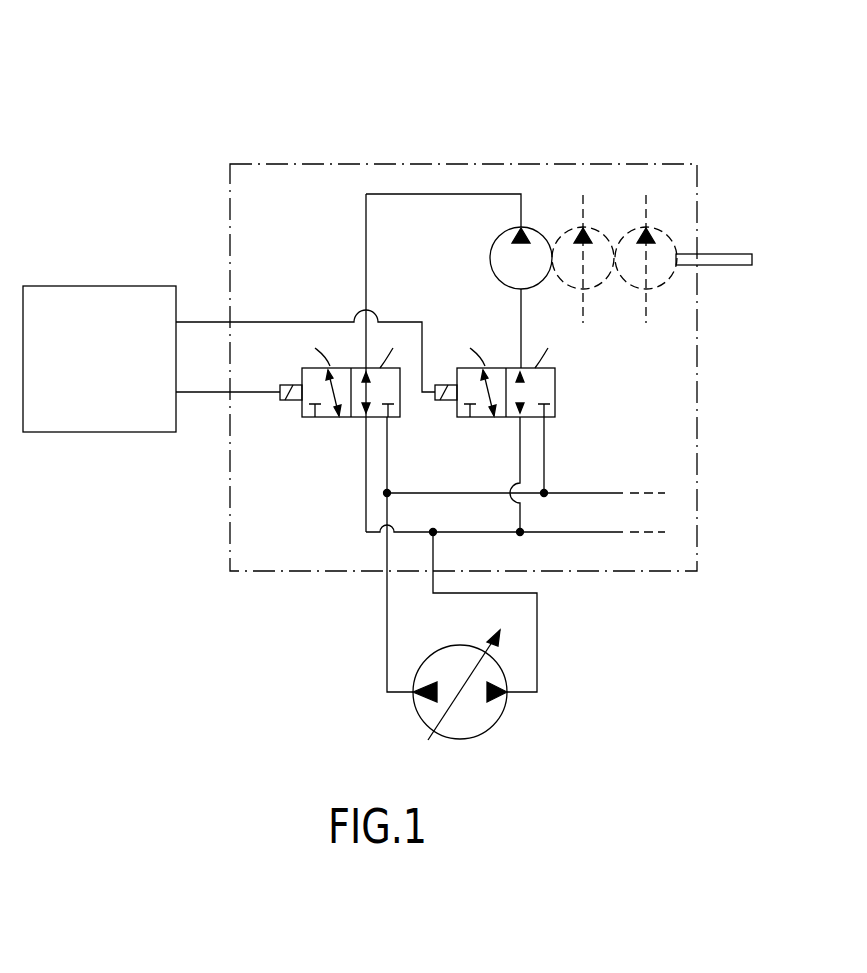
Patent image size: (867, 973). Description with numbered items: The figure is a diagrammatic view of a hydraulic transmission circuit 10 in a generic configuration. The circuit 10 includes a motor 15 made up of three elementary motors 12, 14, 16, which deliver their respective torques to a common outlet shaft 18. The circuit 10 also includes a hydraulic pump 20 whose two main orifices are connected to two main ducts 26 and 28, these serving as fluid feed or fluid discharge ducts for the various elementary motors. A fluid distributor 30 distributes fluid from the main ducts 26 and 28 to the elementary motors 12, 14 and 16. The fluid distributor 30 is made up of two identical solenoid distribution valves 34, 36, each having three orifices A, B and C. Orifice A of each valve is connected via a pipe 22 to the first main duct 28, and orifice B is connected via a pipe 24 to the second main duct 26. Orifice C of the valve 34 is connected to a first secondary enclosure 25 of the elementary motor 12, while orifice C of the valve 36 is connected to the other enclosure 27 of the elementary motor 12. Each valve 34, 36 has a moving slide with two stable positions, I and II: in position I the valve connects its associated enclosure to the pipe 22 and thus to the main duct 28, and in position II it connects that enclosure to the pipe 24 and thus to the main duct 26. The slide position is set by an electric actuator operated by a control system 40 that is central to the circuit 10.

The hydraulic transmission circuit 10 is at (212, 92).
The elementary motor 12 is at (491, 255).
The elementary motor 14 is at (604, 236).
The elementary motor 16 is at (667, 236).
The common outlet shaft 18 is at (720, 254).
The motor 15 is at (697, 440).
The hydraulic pump 20 is at (491, 718).
The pipe 22 is at (366, 492).
The pipe 24 is at (388, 472).
The first secondary enclosure 25 is at (366, 206).
The main duct 26 is at (387, 640).
The other enclosure 27 is at (521, 322).
The main duct 28 is at (537, 640).
The fluid distributor 30 is at (553, 446).
The distribution valve 34 is at (322, 418).
The distribution valve 36 is at (466, 418).
The control system 40 is at (229, 359).